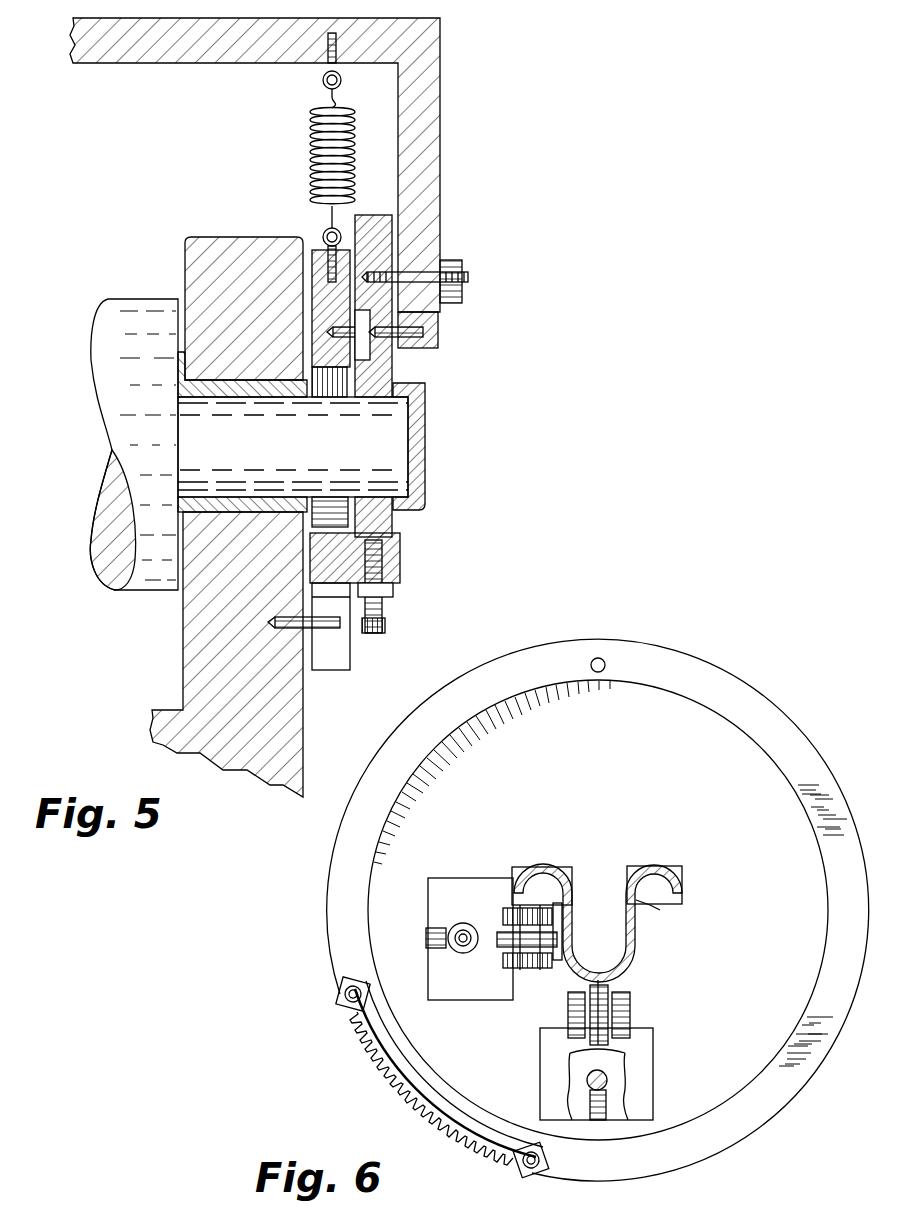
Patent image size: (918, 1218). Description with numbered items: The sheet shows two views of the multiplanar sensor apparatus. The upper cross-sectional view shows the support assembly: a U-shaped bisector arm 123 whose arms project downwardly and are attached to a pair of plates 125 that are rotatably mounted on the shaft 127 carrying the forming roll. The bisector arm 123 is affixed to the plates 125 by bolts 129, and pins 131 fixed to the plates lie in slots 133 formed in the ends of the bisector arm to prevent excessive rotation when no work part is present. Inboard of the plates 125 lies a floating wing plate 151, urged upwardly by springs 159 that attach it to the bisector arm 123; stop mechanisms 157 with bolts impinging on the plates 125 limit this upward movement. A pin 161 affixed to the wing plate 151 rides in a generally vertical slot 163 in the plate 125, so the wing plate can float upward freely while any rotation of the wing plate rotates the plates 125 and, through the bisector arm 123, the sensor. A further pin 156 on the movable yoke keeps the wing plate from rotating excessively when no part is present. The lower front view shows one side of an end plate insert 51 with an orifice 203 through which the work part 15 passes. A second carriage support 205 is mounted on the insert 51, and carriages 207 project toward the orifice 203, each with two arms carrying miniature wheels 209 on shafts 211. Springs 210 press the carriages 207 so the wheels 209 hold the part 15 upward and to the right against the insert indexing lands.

In FIG. 5, the U-shaped bisector arm 123 is at (440, 128).
In FIG. 5, the springs 159 is at (310, 152).
In FIG. 5, the floating wing plate 151 is at (320, 252).
In FIG. 5, the pin 161 is at (340, 328).
In FIG. 5, the vertical slot 163 is at (362, 356).
In FIG. 5, the plates 125 is at (388, 527).
In FIG. 5, the shaft 127 is at (428, 447).
In FIG. 5, the bolts 129 is at (468, 278).
In FIG. 5, the pins 131 is at (422, 327).
In FIG. 5, the slots 133 is at (438, 341).
In FIG. 5, the stop mechanisms 157 is at (408, 562).
In FIG. 5, the pin 156 is at (340, 633).
In FIG. 6, the insert 51 is at (760, 785).
In FIG. 6, the work part 15 is at (653, 868).
In FIG. 6, the orifice 203 is at (655, 895).
In FIG. 6, the second carriage support 205 is at (455, 995).
In FIG. 6, the carriages 207 is at (510, 970).
In FIG. 6, the miniature wheels 209 is at (500, 940).
In FIG. 6, the shafts 211 is at (527, 968).
In FIG. 6, the springs 210 is at (597, 1120).